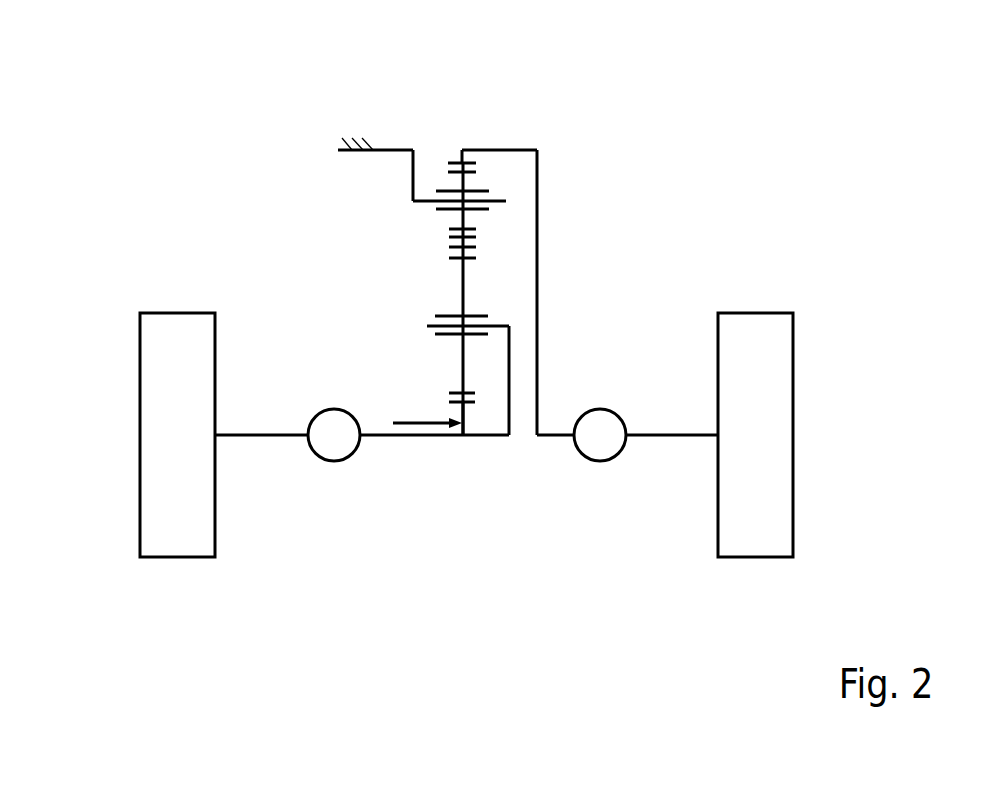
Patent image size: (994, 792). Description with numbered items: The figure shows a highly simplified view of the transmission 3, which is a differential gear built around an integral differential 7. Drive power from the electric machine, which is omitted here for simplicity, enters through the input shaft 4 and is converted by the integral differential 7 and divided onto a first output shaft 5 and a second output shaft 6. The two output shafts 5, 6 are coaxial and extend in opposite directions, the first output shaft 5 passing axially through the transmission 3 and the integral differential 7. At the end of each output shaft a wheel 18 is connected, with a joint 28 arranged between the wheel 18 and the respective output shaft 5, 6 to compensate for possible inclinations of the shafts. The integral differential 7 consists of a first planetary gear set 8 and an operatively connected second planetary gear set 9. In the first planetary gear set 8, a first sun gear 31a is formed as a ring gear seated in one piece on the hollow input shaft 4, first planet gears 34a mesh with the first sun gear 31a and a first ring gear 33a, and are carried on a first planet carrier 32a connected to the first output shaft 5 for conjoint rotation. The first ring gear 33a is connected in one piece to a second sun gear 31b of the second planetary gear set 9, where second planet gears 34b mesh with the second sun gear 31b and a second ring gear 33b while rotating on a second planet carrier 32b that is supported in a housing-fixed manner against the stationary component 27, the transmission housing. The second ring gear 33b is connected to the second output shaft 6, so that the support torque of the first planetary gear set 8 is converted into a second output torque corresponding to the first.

The transmission 3 is at (617, 97).
The input shaft 4 is at (413, 435).
The first output shaft 5 is at (447, 435).
The second output shaft 6 is at (555, 435).
The integral differential 7 is at (558, 117).
The first planetary gear set 8 is at (492, 270).
The second planetary gear set 9 is at (490, 182).
The wheel 18 is at (172, 542).
The stationary component 27 is at (366, 142).
The joint 28 is at (333, 435).
The first sun gear 31a is at (468, 402).
The second sun gear 31b is at (448, 245).
The first planet carrier 32a is at (497, 325).
The second planet carrier 32b is at (413, 201).
The first ring gear 33a is at (250, 282).
The second ring gear 33b is at (457, 153).
The first planet gears 34a is at (463, 352).
The second planet gears 34b is at (458, 183).